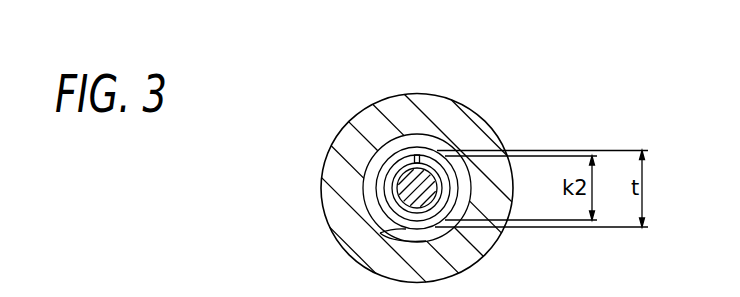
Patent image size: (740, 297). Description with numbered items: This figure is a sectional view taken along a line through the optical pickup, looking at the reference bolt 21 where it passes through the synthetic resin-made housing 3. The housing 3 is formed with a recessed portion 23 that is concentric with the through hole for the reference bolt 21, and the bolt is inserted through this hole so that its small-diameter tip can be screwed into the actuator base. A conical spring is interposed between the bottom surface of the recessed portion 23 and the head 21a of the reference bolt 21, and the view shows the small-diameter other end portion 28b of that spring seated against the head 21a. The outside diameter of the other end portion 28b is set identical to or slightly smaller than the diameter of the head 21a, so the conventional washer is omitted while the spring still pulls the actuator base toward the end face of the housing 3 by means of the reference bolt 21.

The housing 3 is at (350, 140).
The reference bolt 21 is at (410, 188).
The head 21a is at (415, 155).
The recessed portion 23 is at (392, 233).
The other end portion 28b is at (388, 166).